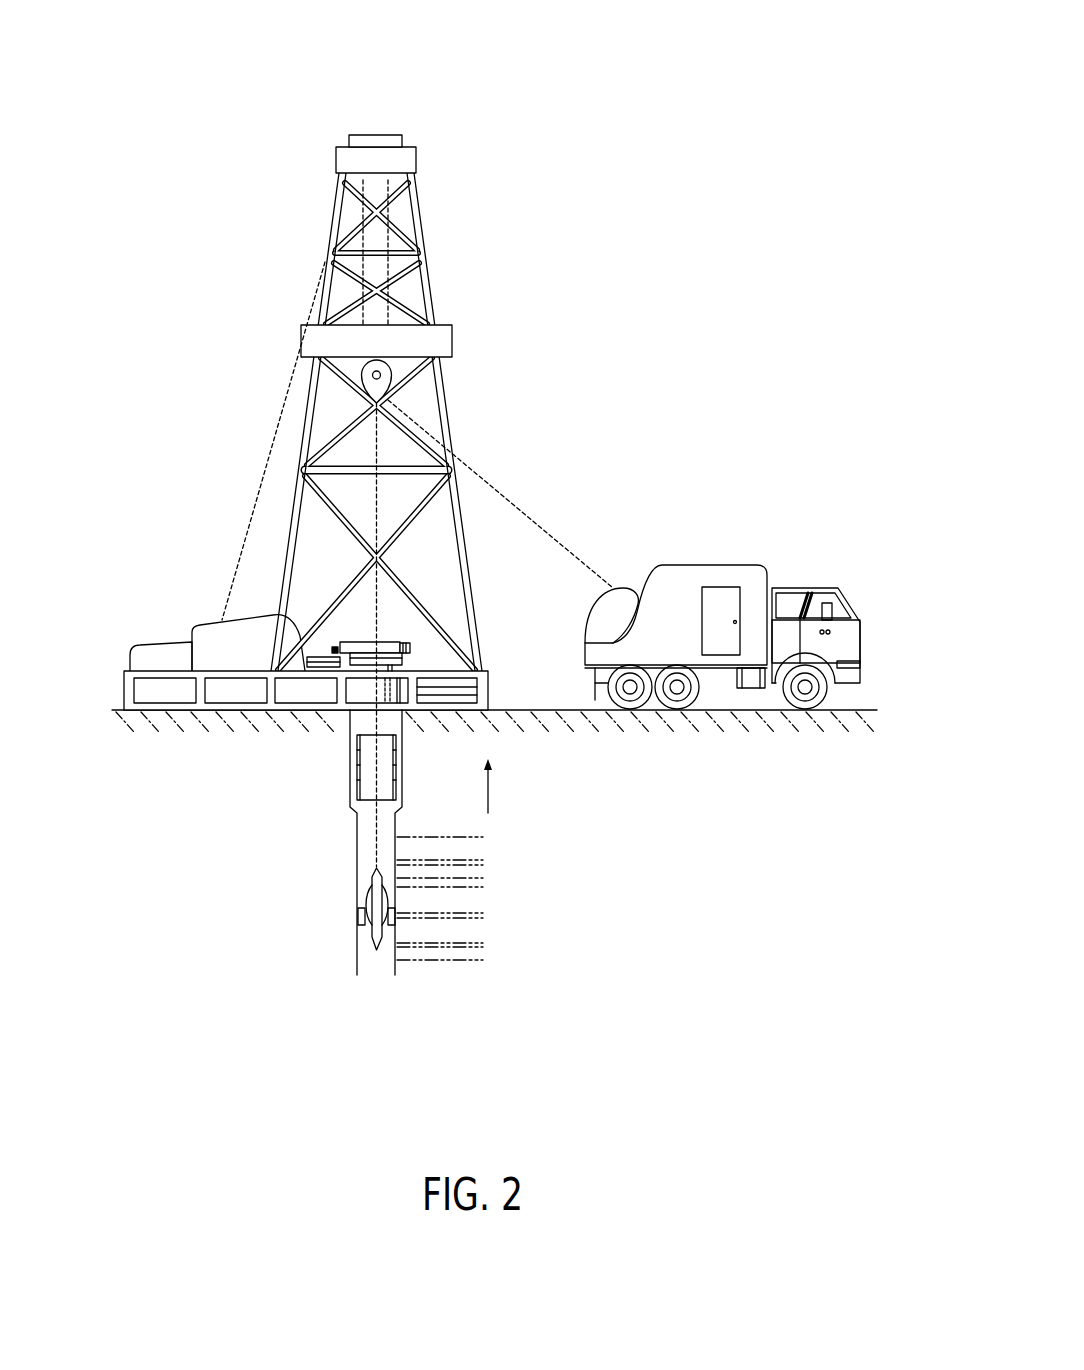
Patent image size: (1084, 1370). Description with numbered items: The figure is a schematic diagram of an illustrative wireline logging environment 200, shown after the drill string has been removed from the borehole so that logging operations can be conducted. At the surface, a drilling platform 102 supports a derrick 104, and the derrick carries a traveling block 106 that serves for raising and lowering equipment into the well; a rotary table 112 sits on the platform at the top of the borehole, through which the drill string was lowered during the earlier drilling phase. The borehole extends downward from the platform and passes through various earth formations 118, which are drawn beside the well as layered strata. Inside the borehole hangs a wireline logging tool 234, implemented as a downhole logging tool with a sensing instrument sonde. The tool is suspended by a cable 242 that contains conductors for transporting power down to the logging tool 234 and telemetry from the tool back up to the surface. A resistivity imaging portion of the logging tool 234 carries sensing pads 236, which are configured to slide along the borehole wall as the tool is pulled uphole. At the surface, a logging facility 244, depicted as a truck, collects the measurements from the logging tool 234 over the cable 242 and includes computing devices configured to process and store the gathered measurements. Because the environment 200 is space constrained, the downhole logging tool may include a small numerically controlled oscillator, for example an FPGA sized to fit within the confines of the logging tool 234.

The wireline logging environment 200 is at (665, 79).
The drilling platform 102 is at (489, 680).
The derrick 104 is at (470, 628).
The traveling block 106 is at (392, 376).
The rotary table 112 is at (400, 640).
The earth formations 118 is at (487, 837).
The wireline logging tool 234 is at (376, 898).
The sensing pads 236 is at (360, 925).
The cable 242 is at (475, 468).
The logging facility 244 is at (673, 565).